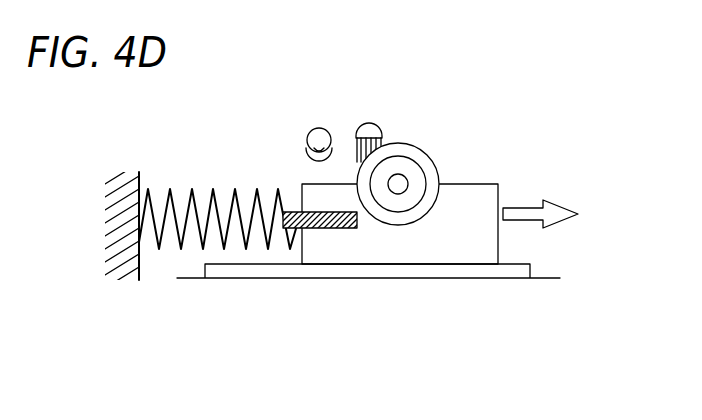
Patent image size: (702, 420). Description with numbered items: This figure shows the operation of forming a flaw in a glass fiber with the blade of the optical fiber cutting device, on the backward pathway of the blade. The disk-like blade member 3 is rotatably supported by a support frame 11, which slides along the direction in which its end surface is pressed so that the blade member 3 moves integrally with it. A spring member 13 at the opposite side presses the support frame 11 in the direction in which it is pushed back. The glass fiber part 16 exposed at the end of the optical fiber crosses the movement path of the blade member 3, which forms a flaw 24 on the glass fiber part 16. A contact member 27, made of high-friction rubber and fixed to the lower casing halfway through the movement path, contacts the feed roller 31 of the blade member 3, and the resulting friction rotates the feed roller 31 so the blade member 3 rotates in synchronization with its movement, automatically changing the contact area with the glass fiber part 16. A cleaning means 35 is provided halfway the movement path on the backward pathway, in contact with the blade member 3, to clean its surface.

The blade member 3 is at (404, 143).
The support frame 11 is at (482, 183).
The spring member 13 is at (179, 191).
The glass fiber part 16 is at (327, 131).
The flaw 24 is at (316, 151).
The contact member 27 is at (357, 228).
The feed roller 31 is at (418, 166).
The cleaning means 35 is at (380, 127).